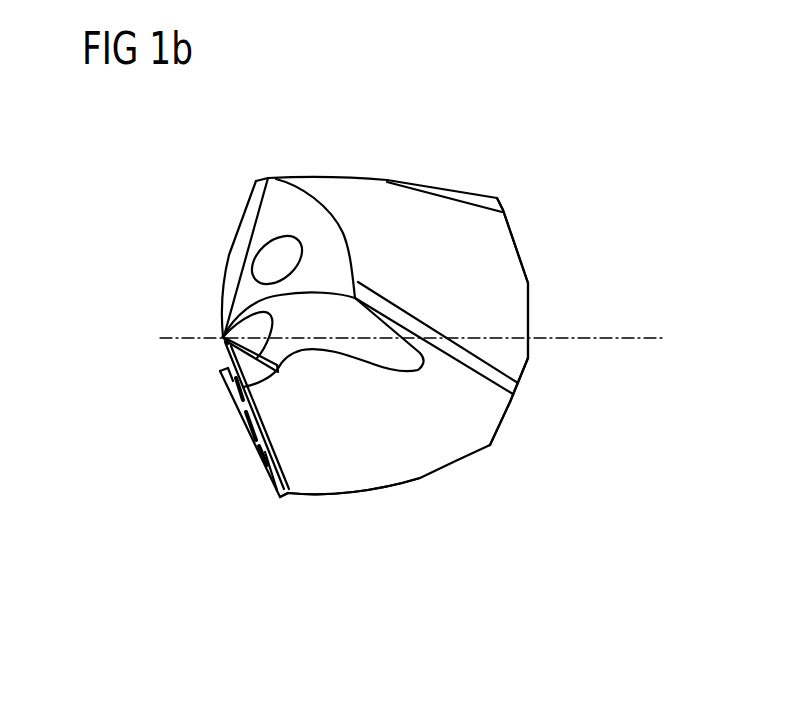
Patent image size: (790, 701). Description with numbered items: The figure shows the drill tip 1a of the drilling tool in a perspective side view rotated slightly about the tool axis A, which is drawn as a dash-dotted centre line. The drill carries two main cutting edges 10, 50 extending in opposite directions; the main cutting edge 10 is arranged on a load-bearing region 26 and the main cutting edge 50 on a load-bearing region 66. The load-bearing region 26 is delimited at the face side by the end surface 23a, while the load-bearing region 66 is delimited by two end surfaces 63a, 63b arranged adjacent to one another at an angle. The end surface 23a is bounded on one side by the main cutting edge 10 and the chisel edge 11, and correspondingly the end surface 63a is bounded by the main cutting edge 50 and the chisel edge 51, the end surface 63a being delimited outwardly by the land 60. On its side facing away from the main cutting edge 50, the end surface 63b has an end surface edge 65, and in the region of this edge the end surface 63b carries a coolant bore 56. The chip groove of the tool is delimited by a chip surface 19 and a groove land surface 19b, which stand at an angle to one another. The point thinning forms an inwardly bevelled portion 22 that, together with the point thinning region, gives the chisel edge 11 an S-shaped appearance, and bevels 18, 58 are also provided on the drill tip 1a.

The drill tip 1a is at (409, 148).
The tool axis A is at (637, 337).
The main cutting edge 10 is at (262, 402).
The chisel edge 11 is at (223, 338).
The bevel 18 is at (262, 178).
The chip surface 19 is at (421, 430).
The groove land surface 19b is at (470, 398).
The inwardly bevelled portion 22 is at (252, 373).
The end surface 23a is at (267, 447).
The load-bearing region 26 is at (350, 430).
The main cutting edge 50 is at (232, 248).
The chisel edge 51 is at (223, 337).
The coolant bore 56 is at (273, 262).
The bevel 58 is at (500, 377).
The land 60 is at (470, 250).
The end surface 63a is at (222, 307).
The end surface 63b is at (295, 213).
The end surface edge 65 is at (231, 349).
The load-bearing region 66 is at (470, 250).